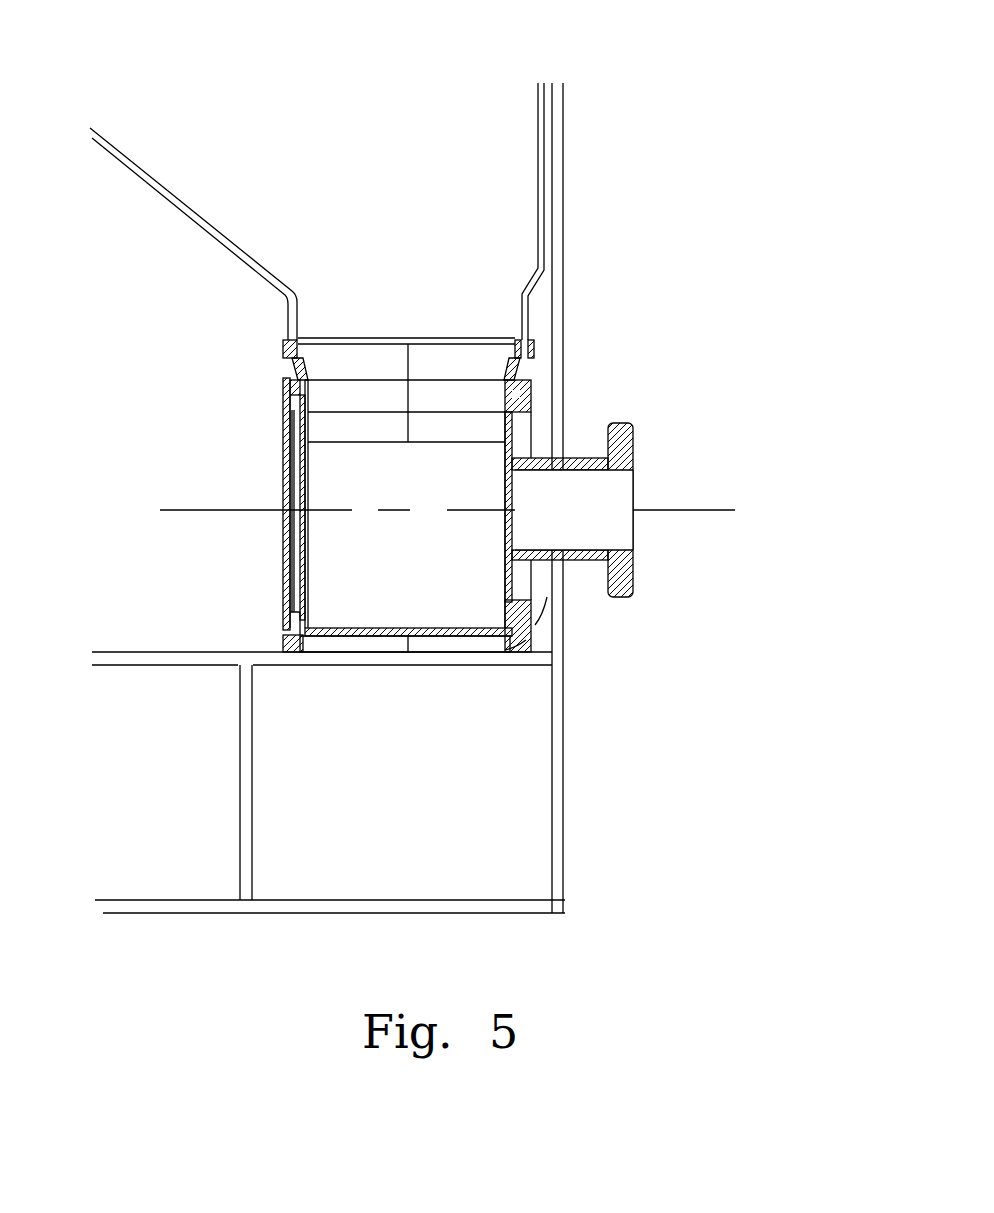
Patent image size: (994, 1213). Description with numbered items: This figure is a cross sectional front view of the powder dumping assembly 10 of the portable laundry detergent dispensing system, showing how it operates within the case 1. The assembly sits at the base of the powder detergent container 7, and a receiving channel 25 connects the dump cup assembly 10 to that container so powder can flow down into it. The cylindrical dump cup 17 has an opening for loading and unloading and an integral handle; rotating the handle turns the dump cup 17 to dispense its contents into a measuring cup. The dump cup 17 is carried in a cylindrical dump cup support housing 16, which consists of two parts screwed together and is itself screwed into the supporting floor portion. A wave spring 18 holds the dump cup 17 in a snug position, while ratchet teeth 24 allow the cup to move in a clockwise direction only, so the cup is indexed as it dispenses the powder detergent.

The case 1 is at (557, 120).
The powder detergent container 7 is at (537, 148).
The dump cup assembly 10 is at (472, 633).
The dump cup support housing 16 is at (537, 338).
The dump cup 17 is at (632, 450).
The wave spring 18 is at (284, 545).
The ratchet teeth 24 is at (532, 395).
The receiving channel 25 is at (278, 340).